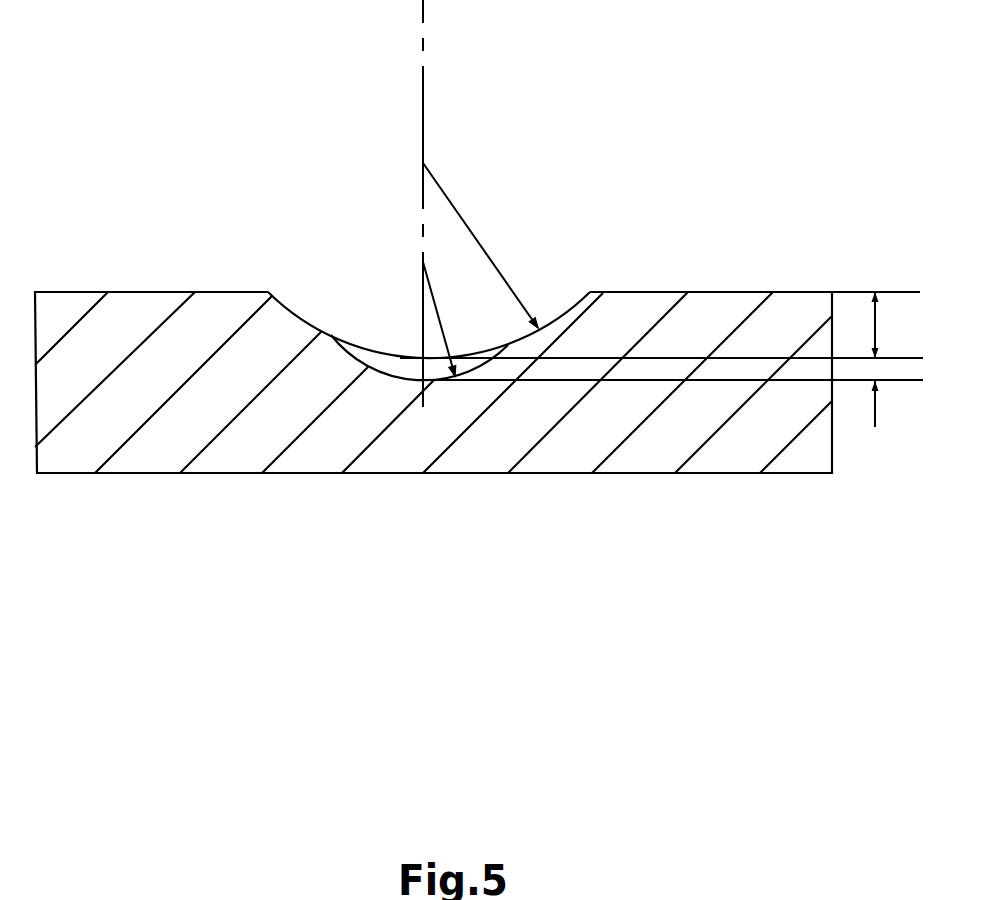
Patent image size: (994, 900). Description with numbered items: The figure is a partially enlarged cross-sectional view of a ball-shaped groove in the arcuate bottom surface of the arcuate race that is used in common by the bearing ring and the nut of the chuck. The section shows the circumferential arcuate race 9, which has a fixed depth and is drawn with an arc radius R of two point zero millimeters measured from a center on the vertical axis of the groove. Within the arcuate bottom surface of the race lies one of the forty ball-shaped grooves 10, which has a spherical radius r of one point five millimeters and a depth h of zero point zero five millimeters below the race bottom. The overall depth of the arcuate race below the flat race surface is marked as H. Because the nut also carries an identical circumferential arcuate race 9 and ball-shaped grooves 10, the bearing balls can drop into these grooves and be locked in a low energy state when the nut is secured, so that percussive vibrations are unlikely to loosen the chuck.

The circumferential arcuate race 9 is at (575, 306).
The ball-shaped groove 10 is at (367, 365).
The arc radius R is at (480, 245).
The spherical radius r is at (440, 319).
The depth of recess H is at (892, 325).
The depth h is at (891, 404).